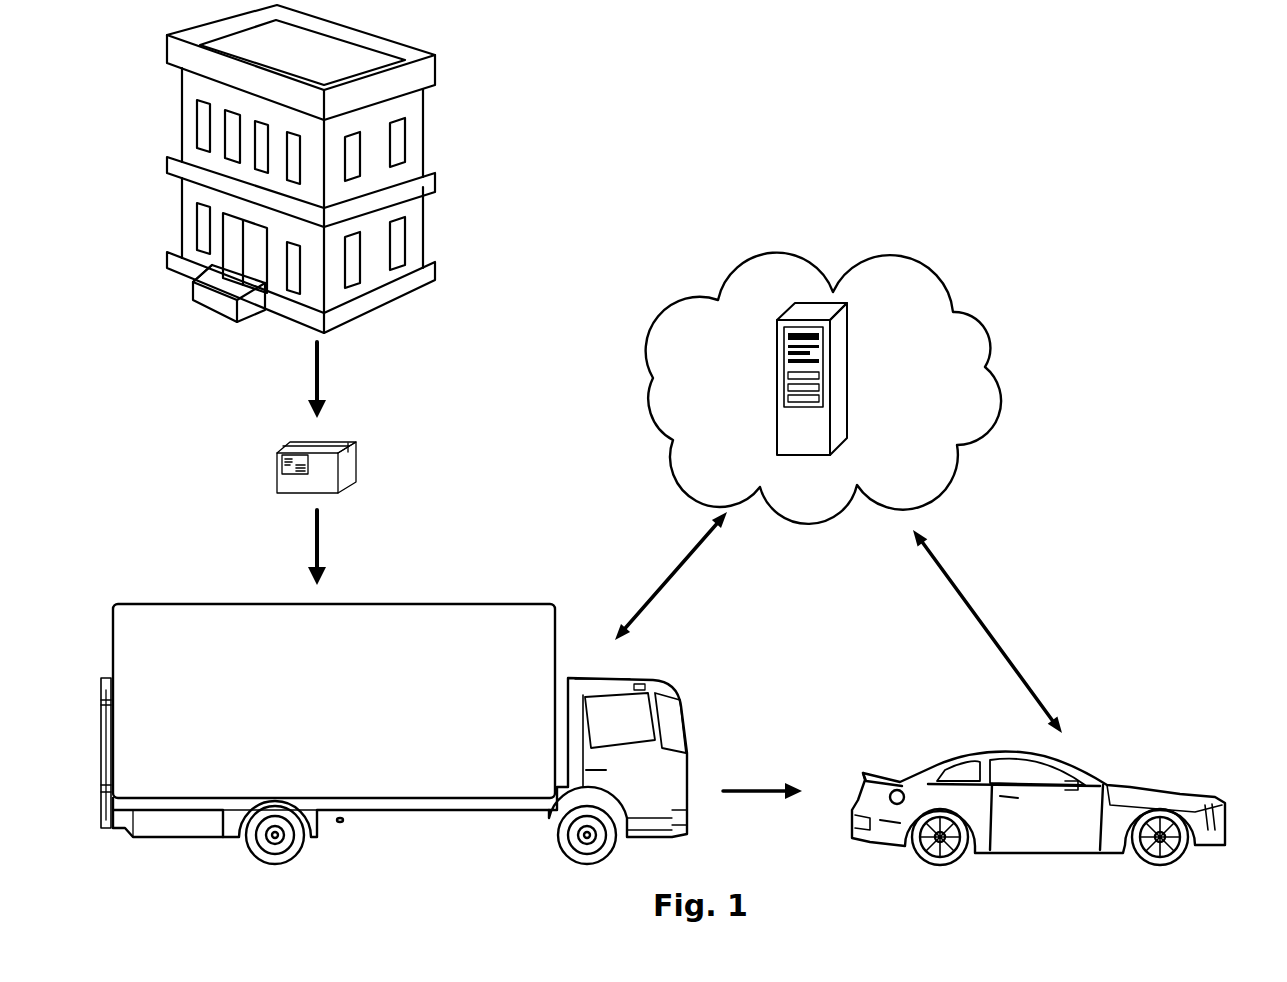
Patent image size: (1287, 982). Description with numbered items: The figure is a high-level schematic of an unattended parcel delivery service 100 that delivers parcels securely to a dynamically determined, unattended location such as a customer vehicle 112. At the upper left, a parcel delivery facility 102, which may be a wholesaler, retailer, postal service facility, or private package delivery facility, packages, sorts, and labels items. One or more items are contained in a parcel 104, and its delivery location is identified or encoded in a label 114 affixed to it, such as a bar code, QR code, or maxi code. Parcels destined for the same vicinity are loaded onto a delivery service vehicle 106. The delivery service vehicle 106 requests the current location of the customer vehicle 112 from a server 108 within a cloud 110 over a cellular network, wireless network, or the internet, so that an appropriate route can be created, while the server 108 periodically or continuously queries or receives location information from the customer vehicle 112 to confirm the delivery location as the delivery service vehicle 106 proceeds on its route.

The unattended parcel delivery service 100 is at (654, 128).
The parcel delivery facility 102 is at (428, 68).
The parcel 104 is at (348, 468).
The delivery service vehicle 106 is at (351, 716).
The server 108 is at (840, 410).
The cloud 110 is at (975, 340).
The customer vehicle 112 is at (1064, 826).
The label 114 is at (282, 462).